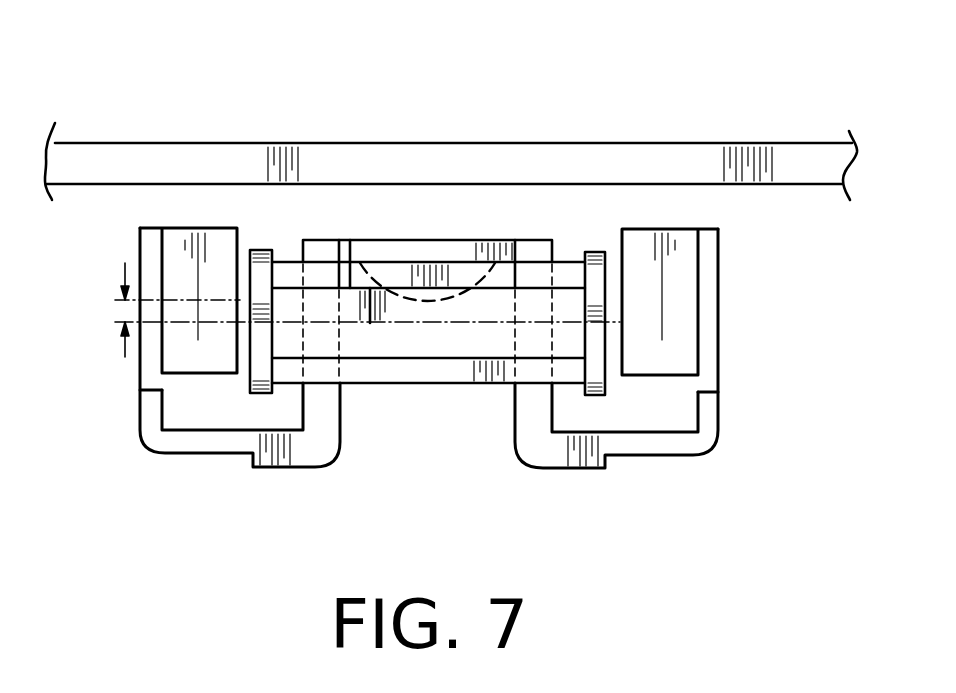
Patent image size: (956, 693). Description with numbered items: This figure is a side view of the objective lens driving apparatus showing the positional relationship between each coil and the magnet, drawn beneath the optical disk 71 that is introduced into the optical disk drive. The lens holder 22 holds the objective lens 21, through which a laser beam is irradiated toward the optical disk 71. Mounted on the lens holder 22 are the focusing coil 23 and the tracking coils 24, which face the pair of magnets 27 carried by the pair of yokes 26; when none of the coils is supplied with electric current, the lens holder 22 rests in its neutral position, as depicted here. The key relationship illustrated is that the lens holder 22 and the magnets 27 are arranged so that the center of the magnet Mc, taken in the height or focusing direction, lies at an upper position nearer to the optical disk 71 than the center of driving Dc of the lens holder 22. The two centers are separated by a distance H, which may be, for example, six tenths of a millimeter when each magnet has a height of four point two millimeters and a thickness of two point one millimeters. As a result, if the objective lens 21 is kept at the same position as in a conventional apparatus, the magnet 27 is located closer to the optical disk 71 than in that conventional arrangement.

The optical disk 71 is at (408, 143).
The objective lens 21 is at (427, 240).
The lens holder 22 is at (452, 387).
The focusing coil 23 is at (352, 240).
The tracking coil 24 is at (260, 250).
The yoke 26 is at (577, 468).
The magnet 27 is at (207, 377).
The center of the magnet Mc is at (185, 300).
The center of driving Dc is at (425, 323).
The distance H is at (107, 310).